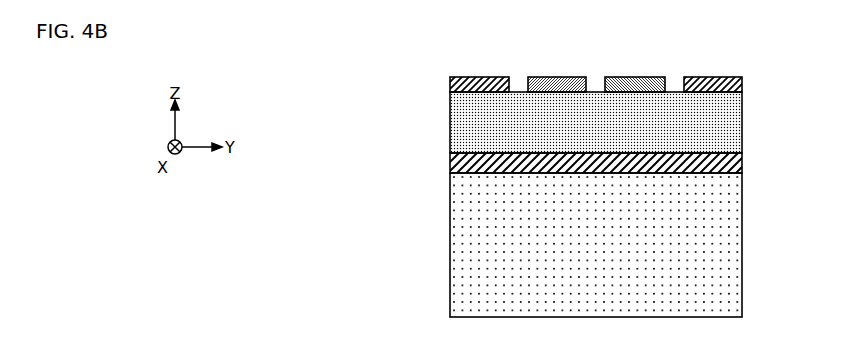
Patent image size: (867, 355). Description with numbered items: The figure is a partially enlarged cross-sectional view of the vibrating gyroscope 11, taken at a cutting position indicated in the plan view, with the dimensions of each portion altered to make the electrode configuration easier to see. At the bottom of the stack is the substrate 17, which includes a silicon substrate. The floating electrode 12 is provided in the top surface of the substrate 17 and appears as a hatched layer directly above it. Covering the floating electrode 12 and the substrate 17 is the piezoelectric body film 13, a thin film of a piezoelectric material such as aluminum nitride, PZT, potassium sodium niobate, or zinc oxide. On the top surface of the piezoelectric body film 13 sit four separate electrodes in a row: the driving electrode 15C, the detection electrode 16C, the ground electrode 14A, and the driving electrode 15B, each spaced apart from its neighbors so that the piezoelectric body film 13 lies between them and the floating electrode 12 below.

The vibrating gyroscope 11 is at (398, 71).
The floating electrode 12 is at (452, 163).
The piezoelectric body film 13 is at (460, 130).
The ground electrode 14A is at (632, 76).
The driving electrode 15B is at (713, 76).
The driving electrode 15C is at (477, 76).
The detection electrode 16C is at (530, 76).
The substrate 17 is at (457, 240).